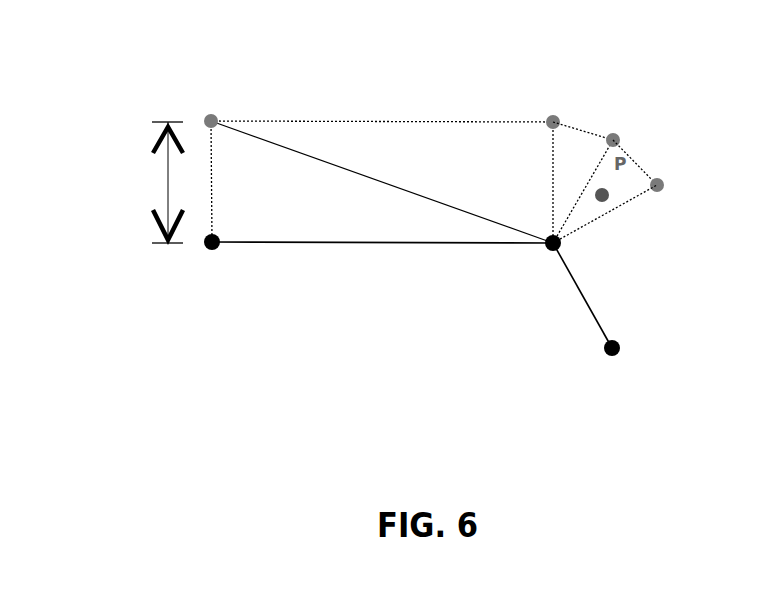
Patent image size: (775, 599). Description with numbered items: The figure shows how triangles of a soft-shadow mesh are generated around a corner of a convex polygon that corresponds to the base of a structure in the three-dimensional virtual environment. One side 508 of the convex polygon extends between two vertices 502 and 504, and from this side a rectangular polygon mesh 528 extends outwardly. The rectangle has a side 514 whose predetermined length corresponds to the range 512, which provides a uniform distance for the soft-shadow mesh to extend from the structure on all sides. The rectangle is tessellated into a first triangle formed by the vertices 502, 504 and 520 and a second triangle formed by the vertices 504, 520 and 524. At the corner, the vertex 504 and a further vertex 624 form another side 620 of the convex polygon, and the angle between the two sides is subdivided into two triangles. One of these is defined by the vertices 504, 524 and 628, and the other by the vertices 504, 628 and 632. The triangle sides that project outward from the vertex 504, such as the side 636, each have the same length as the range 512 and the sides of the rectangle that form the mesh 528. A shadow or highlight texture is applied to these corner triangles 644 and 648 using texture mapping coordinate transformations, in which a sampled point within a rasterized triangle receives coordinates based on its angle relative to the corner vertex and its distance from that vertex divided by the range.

The vertex 502 is at (206, 248).
The vertex 504 is at (555, 251).
The side 508 is at (430, 246).
The range 512 is at (167, 198).
The side 514 is at (206, 244).
The vertex 520 is at (206, 117).
The vertex 524 is at (552, 116).
The polygon mesh 528 is at (405, 119).
The side 620 is at (593, 313).
The vertex 624 is at (606, 352).
The vertex 628 is at (614, 133).
The vertex 632 is at (661, 191).
The side 636 is at (593, 223).
The triangle 644 is at (594, 121).
The triangle 648 is at (655, 170).